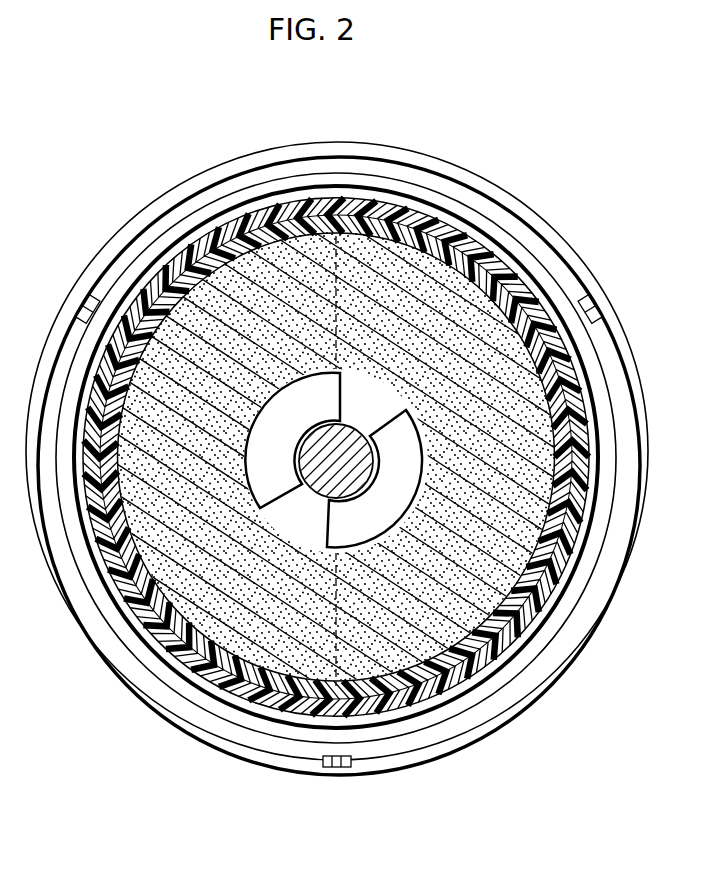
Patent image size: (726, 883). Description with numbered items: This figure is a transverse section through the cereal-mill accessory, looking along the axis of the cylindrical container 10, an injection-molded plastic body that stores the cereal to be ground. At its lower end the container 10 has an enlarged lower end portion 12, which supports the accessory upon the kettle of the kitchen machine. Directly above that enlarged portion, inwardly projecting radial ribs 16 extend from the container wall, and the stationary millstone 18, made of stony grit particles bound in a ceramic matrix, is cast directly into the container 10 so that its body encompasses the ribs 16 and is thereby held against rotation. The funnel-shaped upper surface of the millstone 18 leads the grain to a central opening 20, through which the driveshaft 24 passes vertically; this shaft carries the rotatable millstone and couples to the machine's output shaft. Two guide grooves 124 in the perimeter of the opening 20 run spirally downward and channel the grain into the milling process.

The cylindrical container 10 is at (338, 207).
The enlarged lower end portion 12 is at (426, 158).
The radial ribs 16 is at (548, 636).
The stationary millstone 18 is at (513, 660).
The central opening 20 is at (338, 408).
The driveshaft 24 is at (318, 438).
The guide grooves 124 is at (62, 337).